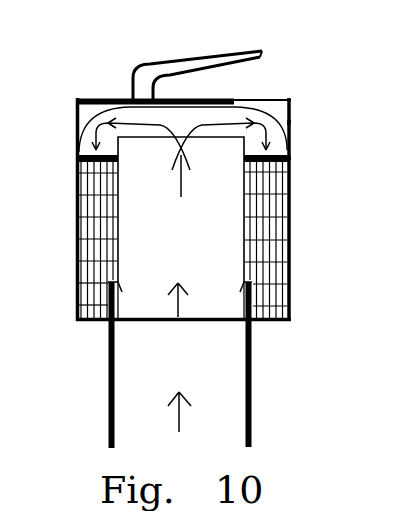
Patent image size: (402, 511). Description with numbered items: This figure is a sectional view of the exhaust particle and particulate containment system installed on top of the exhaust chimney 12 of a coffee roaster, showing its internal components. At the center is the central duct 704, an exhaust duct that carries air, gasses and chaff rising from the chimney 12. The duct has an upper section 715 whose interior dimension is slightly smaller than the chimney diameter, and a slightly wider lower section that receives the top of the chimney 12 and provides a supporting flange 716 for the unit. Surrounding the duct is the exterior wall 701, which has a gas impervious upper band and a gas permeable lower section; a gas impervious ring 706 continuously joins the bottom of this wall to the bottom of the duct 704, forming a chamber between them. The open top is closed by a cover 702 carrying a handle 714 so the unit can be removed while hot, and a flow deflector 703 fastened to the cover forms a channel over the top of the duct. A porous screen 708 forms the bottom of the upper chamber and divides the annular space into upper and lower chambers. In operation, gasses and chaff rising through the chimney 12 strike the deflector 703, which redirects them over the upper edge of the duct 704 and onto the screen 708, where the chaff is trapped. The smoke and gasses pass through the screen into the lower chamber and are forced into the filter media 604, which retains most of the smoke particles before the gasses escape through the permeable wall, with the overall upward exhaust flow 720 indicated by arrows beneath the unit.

The electrode rod 12 is at (107, 408).
The porous hatched block 604 is at (87, 233).
The housing side wall 701 is at (290, 272).
The top inlet plate 702 is at (105, 103).
The housing top corner 703 is at (278, 102).
The gas flow divider pattern 704 is at (243, 138).
The housing bottom wall 706 is at (93, 322).
The upper plenum arc wall 708 is at (286, 150).
The gas inlet tube 714 is at (172, 57).
The inner partition wall 715 is at (121, 222).
The rod support 716 is at (119, 284).
The gas flow direction arrow 720 is at (180, 418).